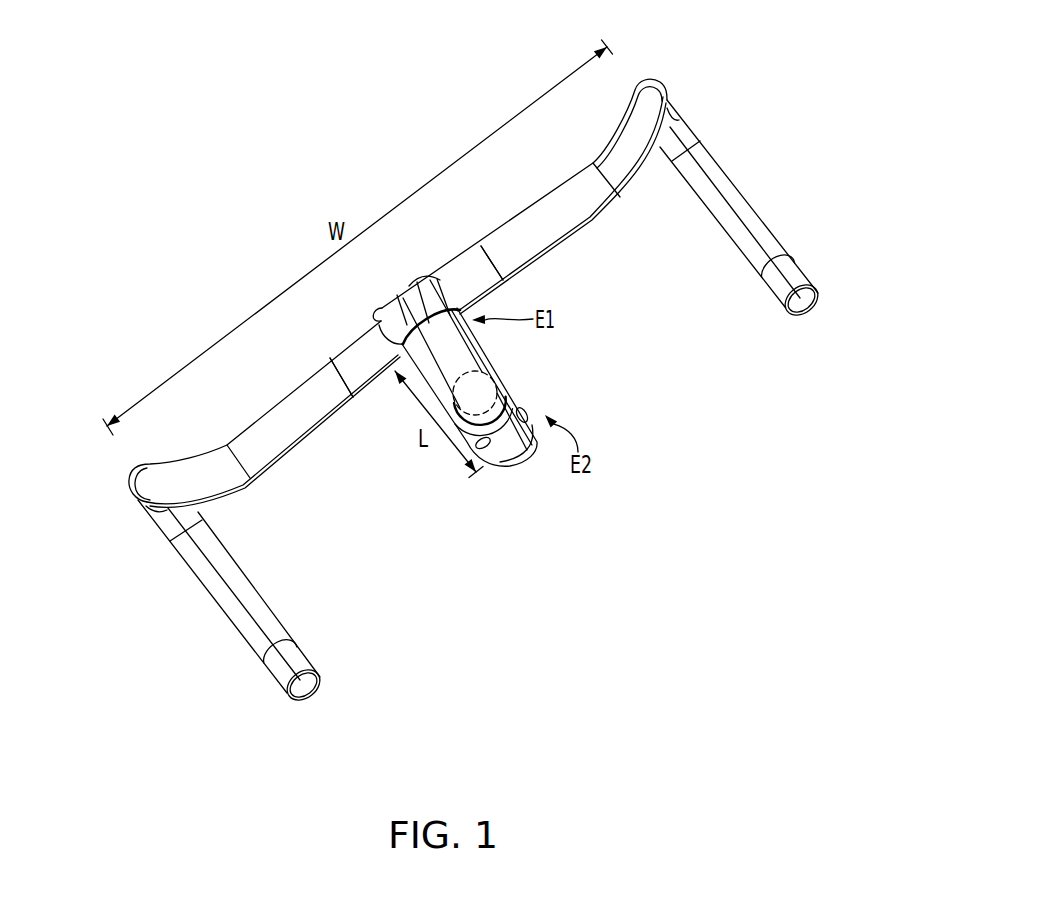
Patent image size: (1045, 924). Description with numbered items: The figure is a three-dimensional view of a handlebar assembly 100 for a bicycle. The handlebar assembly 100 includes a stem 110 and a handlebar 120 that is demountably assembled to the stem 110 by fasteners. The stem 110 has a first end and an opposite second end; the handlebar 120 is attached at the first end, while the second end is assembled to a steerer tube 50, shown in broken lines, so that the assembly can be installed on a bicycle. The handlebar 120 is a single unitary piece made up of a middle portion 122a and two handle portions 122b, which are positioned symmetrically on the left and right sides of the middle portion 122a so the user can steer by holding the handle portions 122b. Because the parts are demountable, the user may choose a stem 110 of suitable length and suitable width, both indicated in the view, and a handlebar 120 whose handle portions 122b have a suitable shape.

The handlebar assembly 100 is at (476, 392).
The stem 110 is at (498, 373).
The handlebar 120 is at (476, 392).
The middle portion 122a is at (413, 283).
The handle portions 122b is at (468, 262).
The steerer tube 50 is at (505, 365).